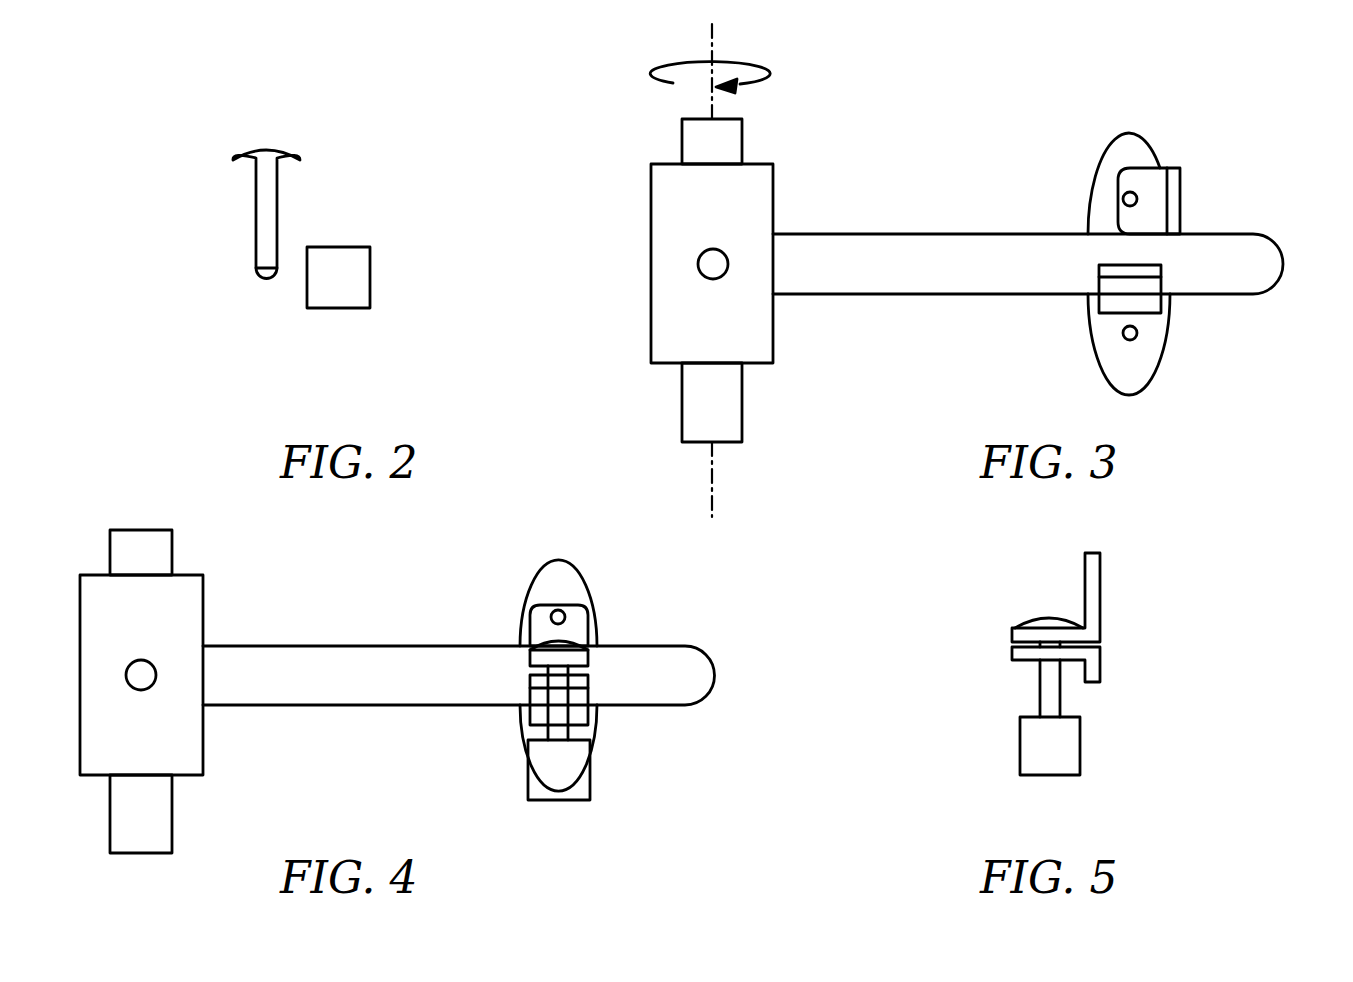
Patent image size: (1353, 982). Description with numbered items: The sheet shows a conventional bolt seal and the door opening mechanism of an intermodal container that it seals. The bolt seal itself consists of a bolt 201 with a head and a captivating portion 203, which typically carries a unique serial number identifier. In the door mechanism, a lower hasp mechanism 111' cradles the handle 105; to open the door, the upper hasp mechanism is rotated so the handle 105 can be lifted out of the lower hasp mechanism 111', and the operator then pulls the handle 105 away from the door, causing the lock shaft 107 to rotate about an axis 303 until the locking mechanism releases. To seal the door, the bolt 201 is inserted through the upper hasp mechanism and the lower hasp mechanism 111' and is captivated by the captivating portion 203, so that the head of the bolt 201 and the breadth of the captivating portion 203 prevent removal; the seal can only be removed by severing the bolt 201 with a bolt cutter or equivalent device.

In FIG. 3, the handle 105 is at (1274, 258).
In FIG. 3, the lock shaft 107 is at (732, 141).
In FIG. 3, the lower hasp mechanism 111' is at (1100, 299).
In FIG. 4, the lower hasp mechanism 111' is at (529, 698).
In FIG. 5, the lower hasp mechanism 111' is at (1027, 662).
In FIG. 2, the bolt 201 is at (270, 211).
In FIG. 4, the bolt 201 is at (577, 641).
In FIG. 5, the bolt 201 is at (1050, 616).
In FIG. 2, the captivating portion 203 is at (361, 278).
In FIG. 4, the captivating portion 203 is at (537, 772).
In FIG. 5, the captivating portion 203 is at (1070, 748).
In FIG. 3, the axis 303 is at (716, 42).